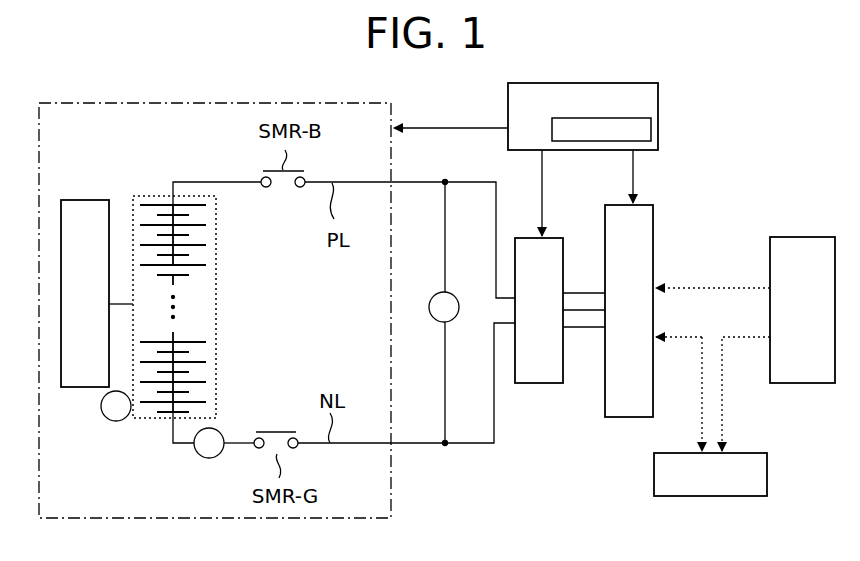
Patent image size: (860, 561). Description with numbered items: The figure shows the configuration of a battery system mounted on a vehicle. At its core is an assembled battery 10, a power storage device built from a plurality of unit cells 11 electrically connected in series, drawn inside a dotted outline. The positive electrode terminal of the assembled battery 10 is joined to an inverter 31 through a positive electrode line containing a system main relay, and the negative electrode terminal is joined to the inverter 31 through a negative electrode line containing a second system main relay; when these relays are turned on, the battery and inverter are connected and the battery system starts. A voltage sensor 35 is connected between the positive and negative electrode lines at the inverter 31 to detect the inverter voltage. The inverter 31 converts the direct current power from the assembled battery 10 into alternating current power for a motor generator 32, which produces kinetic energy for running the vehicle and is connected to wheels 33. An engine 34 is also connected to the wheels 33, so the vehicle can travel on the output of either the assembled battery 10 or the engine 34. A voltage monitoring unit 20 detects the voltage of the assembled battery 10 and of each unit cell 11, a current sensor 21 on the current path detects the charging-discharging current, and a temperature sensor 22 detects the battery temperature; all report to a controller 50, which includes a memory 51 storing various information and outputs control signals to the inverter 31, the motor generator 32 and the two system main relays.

The assembled battery 10 is at (155, 196).
The unit cell 11 is at (205, 212).
The voltage monitoring unit 20 is at (85, 199).
The current sensor 21 is at (198, 455).
The temperature sensor 22 is at (116, 421).
The inverter 31 is at (537, 384).
The motor generator 32 is at (622, 418).
The wheels 33 is at (707, 497).
The engine 34 is at (805, 384).
The voltage sensor 35 is at (456, 296).
The controller 50 is at (658, 101).
The memory 51 is at (651, 129).